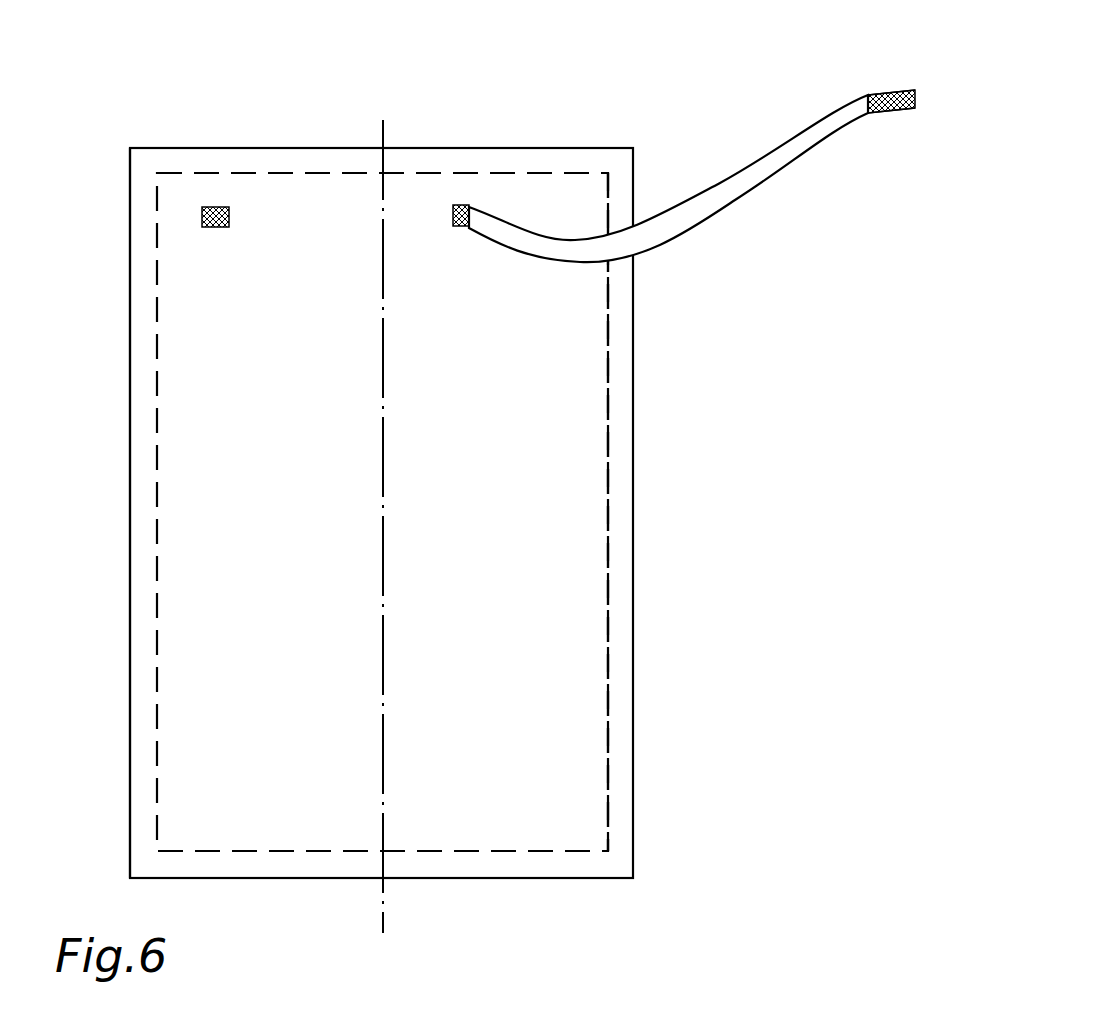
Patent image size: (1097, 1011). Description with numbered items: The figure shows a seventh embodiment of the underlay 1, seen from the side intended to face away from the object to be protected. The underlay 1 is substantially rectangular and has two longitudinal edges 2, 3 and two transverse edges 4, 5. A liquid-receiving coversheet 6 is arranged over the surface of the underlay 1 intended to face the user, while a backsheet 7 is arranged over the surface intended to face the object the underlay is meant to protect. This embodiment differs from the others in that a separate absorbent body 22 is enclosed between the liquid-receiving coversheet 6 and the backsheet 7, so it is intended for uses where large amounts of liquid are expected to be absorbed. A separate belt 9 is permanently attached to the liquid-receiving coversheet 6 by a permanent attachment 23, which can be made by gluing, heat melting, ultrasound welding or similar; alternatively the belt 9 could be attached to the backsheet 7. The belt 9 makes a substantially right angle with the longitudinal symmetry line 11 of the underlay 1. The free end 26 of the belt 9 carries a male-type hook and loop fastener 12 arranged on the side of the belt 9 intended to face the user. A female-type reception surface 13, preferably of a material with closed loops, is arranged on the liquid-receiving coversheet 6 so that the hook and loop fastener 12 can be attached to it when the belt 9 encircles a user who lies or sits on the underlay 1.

The underlay 1 is at (112, 83).
The longitudinal edge 2 is at (633, 552).
The longitudinal edge 3 is at (130, 415).
The transverse edge 4 is at (280, 148).
The transverse edge 5 is at (458, 877).
The liquid-receiving coversheet 6 is at (566, 660).
The backsheet 7 is at (615, 763).
The belt 9 is at (720, 180).
The longitudinal symmetry line 11 is at (383, 905).
The hook and loop fastener 12 is at (880, 115).
The reception surface 13 is at (200, 214).
The absorbent body 22 is at (607, 372).
The permanent attachment 23 is at (457, 205).
The free end 26 is at (913, 95).